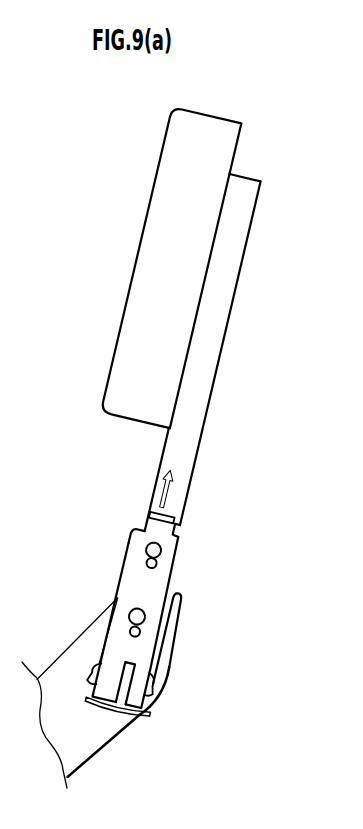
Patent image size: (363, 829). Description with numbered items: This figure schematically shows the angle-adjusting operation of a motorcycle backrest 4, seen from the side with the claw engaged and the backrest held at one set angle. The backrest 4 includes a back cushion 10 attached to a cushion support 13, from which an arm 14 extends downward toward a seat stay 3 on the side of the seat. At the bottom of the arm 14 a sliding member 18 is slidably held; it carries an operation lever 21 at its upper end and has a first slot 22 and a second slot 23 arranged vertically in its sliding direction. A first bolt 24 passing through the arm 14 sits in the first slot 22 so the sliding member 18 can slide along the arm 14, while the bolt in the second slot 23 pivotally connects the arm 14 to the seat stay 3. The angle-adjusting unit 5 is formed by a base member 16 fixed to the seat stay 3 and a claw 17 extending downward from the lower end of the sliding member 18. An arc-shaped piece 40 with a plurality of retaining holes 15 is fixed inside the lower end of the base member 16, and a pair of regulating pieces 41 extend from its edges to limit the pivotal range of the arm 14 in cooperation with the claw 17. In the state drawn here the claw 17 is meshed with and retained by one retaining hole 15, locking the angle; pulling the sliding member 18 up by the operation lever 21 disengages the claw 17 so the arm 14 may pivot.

The seat stay 3 is at (94, 748).
The backrest 4 is at (253, 150).
The angle-adjusting unit 5 is at (193, 526).
The back cushion 10 is at (162, 153).
The cushion support 13 is at (251, 238).
The arm 14 is at (158, 482).
The retaining hole 15 is at (113, 716).
The base member 16 is at (172, 637).
The claw 17 is at (155, 695).
The sliding member 18 is at (170, 571).
The operation lever 21 is at (172, 514).
The first slot 22 is at (147, 557).
The second slot 23 is at (130, 629).
The first bolt 24 is at (138, 528).
The arc-shaped piece 40 is at (147, 717).
The regulating piece 41 is at (152, 676).